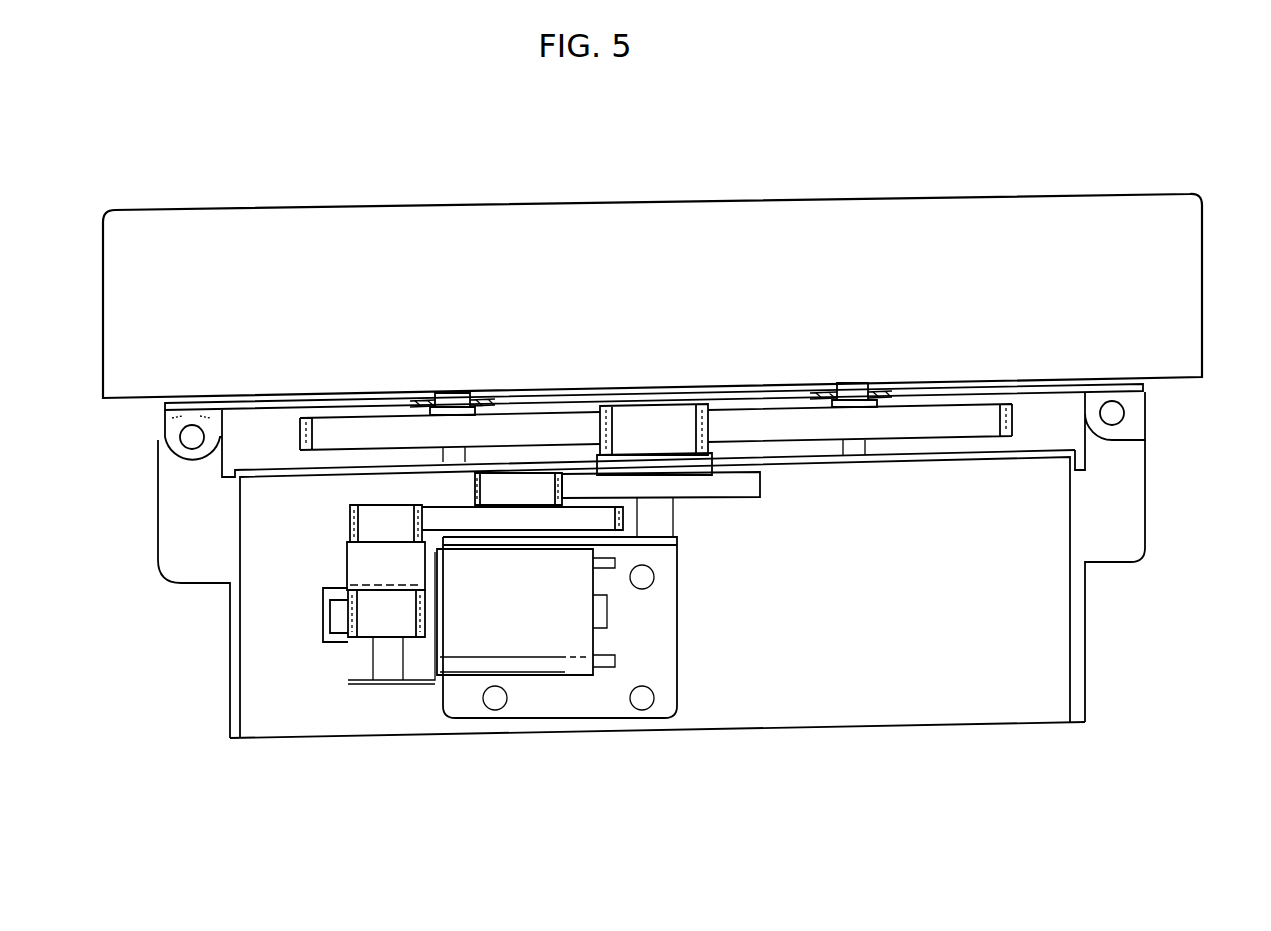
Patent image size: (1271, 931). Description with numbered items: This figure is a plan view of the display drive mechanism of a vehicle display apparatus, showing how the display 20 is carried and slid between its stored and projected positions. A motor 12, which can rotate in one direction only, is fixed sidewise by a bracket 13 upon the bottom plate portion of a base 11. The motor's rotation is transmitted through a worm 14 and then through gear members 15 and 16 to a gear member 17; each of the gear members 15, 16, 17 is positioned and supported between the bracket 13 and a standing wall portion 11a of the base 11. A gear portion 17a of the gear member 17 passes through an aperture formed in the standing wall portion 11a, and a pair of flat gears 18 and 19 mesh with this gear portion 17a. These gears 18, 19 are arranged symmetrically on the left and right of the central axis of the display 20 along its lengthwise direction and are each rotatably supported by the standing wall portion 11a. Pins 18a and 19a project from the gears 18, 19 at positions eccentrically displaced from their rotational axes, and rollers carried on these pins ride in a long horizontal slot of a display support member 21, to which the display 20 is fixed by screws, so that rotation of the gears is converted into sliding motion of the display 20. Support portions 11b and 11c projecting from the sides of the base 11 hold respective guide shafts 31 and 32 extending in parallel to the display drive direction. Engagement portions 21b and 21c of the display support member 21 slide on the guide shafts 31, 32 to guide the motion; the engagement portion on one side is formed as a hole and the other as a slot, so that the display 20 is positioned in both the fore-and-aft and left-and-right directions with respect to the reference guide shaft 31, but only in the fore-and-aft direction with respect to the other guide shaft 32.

The display 20 is at (590, 203).
The display support member 21 is at (673, 394).
The engagement portion 21b is at (196, 462).
The engagement portion 21c is at (1125, 437).
The guide shaft 31 is at (188, 442).
The guide shaft 32 is at (1113, 413).
The gear 18 is at (362, 435).
The pin 18a is at (452, 403).
The gear 19 is at (930, 406).
The pin 19a is at (852, 394).
The gear portion 17a is at (627, 422).
The gear member 17 is at (717, 488).
The gear member 16 is at (443, 518).
The gear member 15 is at (345, 570).
The worm 14 is at (340, 640).
The motor 12 is at (572, 655).
The bracket 13 is at (683, 668).
The base 11 is at (817, 727).
The standing wall portion 11a is at (992, 457).
The support portion 11b is at (193, 573).
The support portion 11c is at (1140, 563).